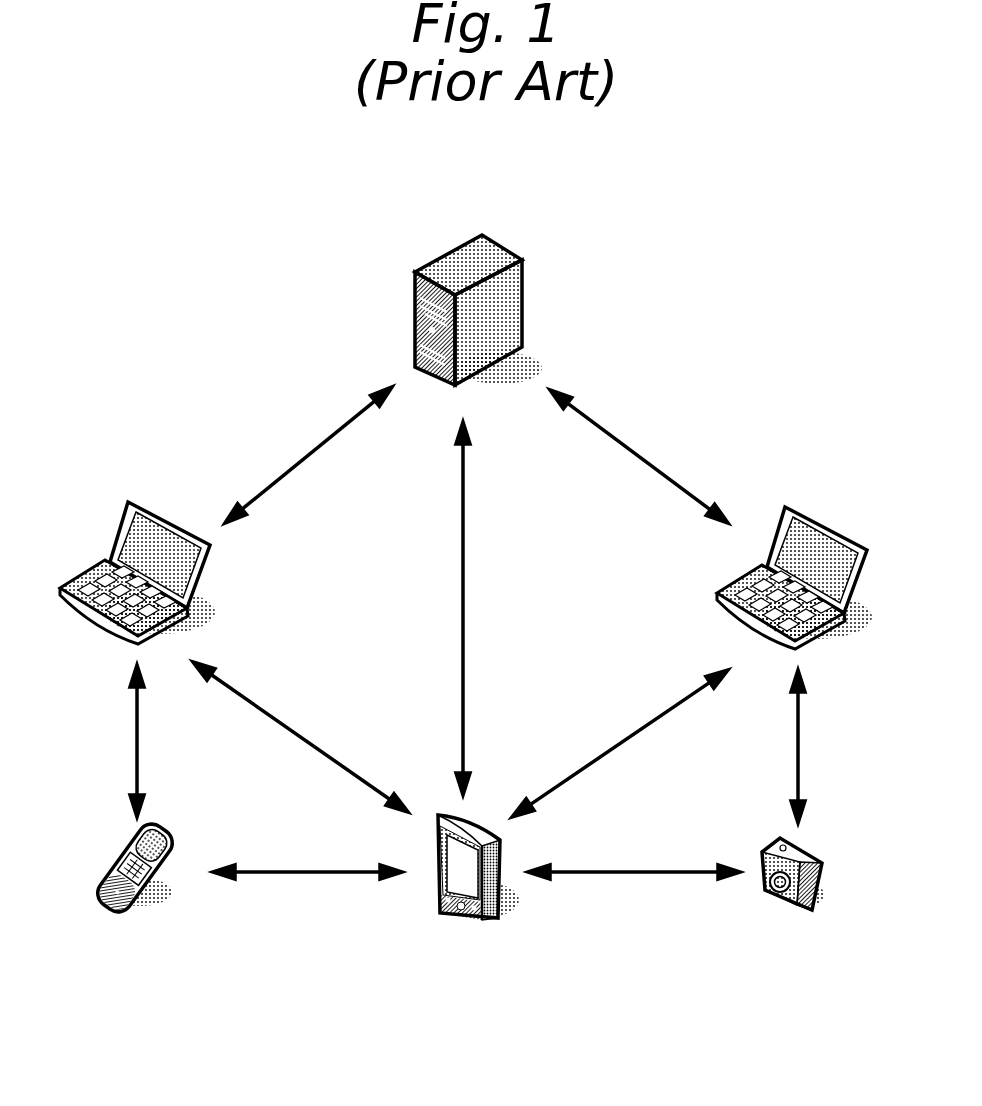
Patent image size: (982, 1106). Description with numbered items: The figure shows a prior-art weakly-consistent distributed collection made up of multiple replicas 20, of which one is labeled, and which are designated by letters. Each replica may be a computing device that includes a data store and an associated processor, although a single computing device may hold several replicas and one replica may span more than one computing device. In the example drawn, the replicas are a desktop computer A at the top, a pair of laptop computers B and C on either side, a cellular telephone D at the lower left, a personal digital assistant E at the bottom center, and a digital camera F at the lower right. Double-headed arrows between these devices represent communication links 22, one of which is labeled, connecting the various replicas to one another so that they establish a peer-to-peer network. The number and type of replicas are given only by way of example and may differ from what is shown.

The replica 20 is at (476, 301).
The communication link 22 is at (644, 458).
The desktop computer A is at (501, 246).
The laptop computer B is at (157, 510).
The laptop computer C is at (834, 525).
The cellular telephone D is at (164, 825).
The personal digital assistant E is at (485, 920).
The digital camera F is at (810, 855).